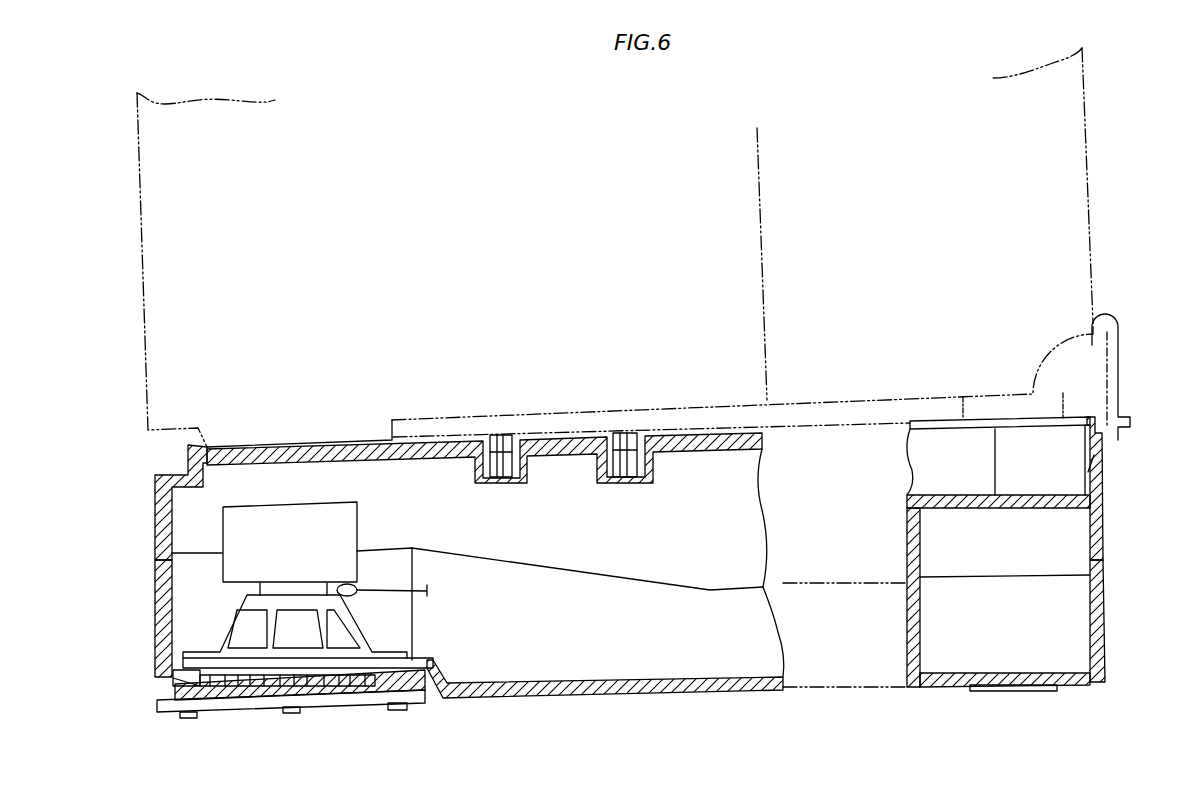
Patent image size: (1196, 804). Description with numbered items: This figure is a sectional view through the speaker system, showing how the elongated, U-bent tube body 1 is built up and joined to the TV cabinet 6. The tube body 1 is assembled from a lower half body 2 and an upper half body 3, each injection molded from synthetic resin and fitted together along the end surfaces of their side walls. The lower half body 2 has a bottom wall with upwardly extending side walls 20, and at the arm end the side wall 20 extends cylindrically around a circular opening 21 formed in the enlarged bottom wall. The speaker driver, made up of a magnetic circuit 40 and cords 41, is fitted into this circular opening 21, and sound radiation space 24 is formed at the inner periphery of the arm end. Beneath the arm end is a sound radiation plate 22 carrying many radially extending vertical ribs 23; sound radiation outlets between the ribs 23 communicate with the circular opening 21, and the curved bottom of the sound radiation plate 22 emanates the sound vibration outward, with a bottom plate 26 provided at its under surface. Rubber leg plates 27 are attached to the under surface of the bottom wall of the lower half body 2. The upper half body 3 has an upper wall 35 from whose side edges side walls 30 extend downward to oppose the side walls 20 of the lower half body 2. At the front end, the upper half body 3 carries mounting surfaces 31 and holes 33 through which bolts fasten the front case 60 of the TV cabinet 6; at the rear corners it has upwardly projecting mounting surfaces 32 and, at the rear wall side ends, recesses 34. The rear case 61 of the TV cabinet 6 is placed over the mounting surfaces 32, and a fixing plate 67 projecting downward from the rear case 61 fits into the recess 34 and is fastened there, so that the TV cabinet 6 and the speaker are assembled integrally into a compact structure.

The tube body 1 is at (140, 503).
The lower half body 2 is at (160, 600).
The upper half body 3 is at (160, 540).
The TV cabinet 6 is at (137, 195).
The front case 60 is at (158, 307).
The rear case 61 is at (1067, 176).
The fixing plate 67 is at (1125, 391).
The side wall 20 is at (752, 643).
The circular opening 21 is at (227, 670).
The sound radiation plate 22 is at (157, 705).
The vertical ribs 23 is at (320, 705).
The sound radiation space 24 is at (172, 683).
The bottom plate 26 is at (162, 716).
The leg plates 27 is at (985, 690).
The side walls 30 is at (748, 533).
The mounting surfaces 31 is at (300, 447).
The mounting surfaces 32 is at (1020, 417).
The holes 33 is at (637, 440).
The recesses 34 is at (1098, 463).
The upper wall 35 is at (945, 492).
The magnetic circuit 40 is at (348, 505).
The cords 41 is at (420, 597).